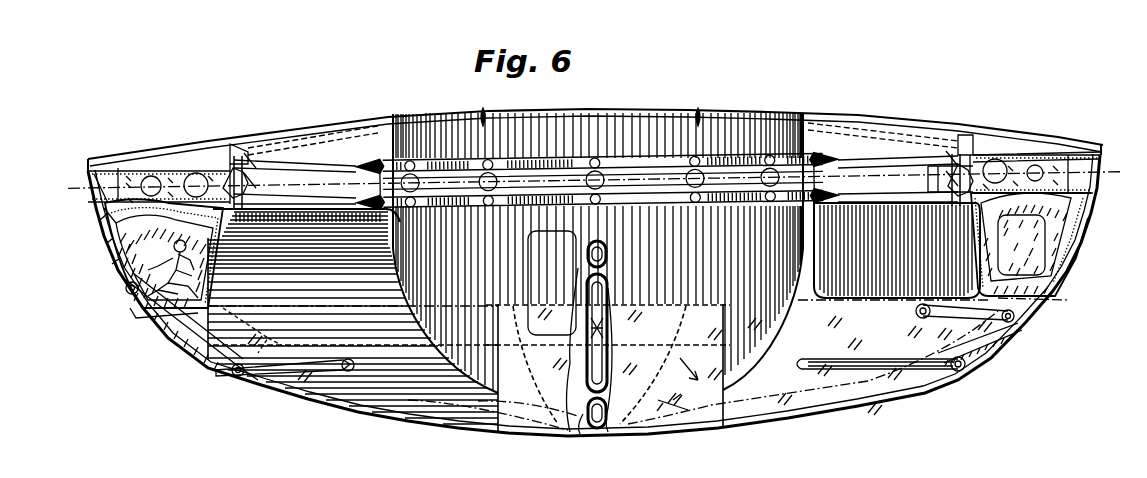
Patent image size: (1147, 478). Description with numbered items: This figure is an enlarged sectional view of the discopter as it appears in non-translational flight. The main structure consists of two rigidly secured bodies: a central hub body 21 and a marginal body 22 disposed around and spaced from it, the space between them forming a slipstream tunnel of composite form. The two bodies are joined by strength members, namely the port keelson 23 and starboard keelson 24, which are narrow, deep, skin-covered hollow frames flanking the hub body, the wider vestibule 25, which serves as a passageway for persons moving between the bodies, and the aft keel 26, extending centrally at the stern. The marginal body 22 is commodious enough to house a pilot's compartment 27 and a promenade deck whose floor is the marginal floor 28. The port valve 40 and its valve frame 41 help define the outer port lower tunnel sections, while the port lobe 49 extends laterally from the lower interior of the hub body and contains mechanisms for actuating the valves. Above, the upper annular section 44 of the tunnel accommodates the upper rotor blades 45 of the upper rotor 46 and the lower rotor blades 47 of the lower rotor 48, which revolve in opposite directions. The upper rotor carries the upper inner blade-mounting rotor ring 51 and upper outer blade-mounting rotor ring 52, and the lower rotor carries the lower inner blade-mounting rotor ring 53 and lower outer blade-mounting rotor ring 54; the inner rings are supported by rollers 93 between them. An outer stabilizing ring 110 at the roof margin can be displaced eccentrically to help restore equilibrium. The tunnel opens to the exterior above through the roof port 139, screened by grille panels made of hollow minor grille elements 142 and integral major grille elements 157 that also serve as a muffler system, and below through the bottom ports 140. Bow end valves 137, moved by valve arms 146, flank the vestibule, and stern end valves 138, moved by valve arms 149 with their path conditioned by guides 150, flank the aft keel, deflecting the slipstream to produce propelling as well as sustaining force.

The hub body 21 is at (660, 104).
The marginal body 22 is at (168, 131).
The port keelson 23 is at (512, 425).
The starboard keelson 24 is at (893, 251).
The vestibule 25 is at (352, 405).
The aft keel 26 is at (810, 397).
The pilot's compartment 27 is at (120, 256).
The marginal floor 28 is at (1066, 262).
The port valve 40 is at (598, 380).
The valve frame 41 is at (578, 428).
The upper annular section 44 is at (298, 98).
The upper rotor blades 45 is at (276, 152).
The upper rotor 46 is at (300, 155).
The lower rotor blades 47 is at (858, 150).
The lower rotor 48 is at (935, 142).
The port lobe 49 is at (704, 416).
The upper inner blade-mounting rotor ring 51 is at (770, 160).
The upper outer blade-mounting rotor ring 52 is at (956, 158).
The lower inner blade-mounting rotor ring 53 is at (738, 150).
The lower outer blade-mounting rotor ring 54 is at (988, 147).
The rollers 93 is at (440, 165).
The outer stabilizing ring 110 is at (80, 151).
The bow end valves 137 is at (212, 374).
The stern end valves 138 is at (958, 358).
The roof port 139 is at (376, 115).
The bottom ports 140 is at (398, 432).
The minor grille elements 142 is at (246, 145).
The valve arms 146 is at (290, 392).
The valve arms 149 is at (1002, 310).
The guides 150 is at (946, 370).
The major grille elements 157 is at (252, 146).